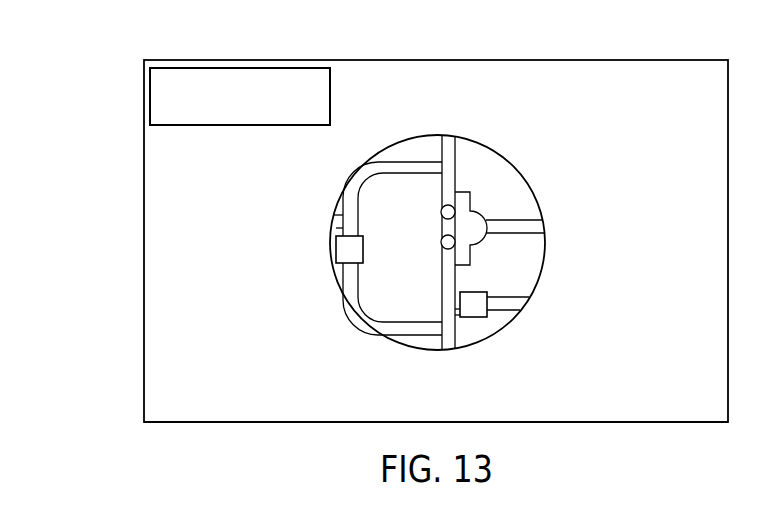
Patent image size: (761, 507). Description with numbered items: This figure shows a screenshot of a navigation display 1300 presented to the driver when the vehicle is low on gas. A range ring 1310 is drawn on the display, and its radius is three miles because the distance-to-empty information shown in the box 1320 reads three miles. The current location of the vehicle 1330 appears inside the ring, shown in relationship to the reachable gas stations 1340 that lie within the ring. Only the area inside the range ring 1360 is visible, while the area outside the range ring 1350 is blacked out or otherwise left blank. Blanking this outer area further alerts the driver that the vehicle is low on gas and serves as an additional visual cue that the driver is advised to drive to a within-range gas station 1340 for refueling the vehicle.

The navigation display 1300 is at (685, 60).
The range ring 1310 is at (539, 276).
The box 1320 is at (150, 96).
The current location of the vehicle 1330 is at (476, 214).
The reachable gas stations 1340 is at (336, 250).
The area outside the range ring 1350 is at (672, 408).
The area inside the range ring 1360 is at (483, 160).